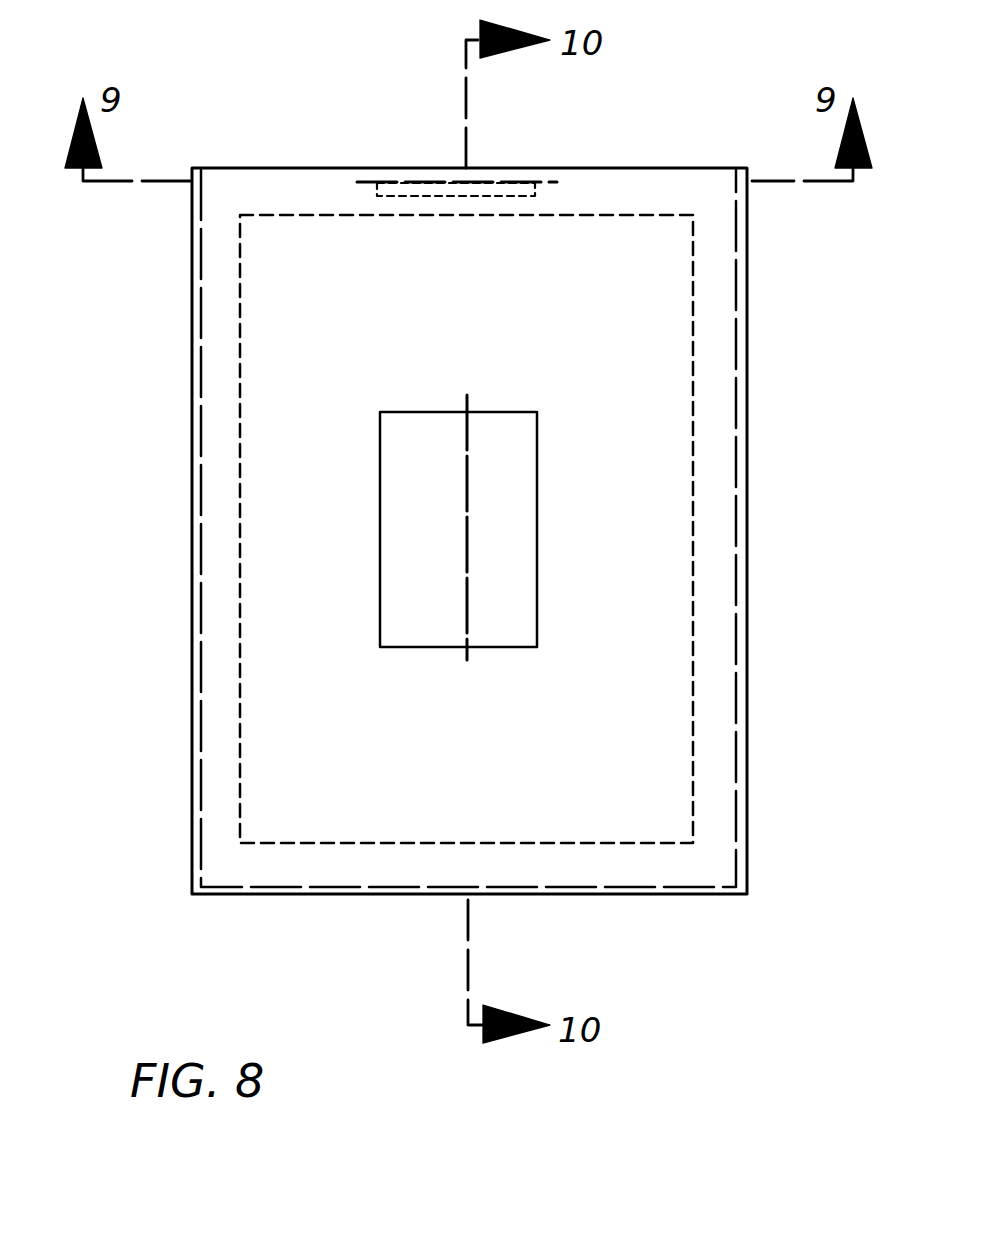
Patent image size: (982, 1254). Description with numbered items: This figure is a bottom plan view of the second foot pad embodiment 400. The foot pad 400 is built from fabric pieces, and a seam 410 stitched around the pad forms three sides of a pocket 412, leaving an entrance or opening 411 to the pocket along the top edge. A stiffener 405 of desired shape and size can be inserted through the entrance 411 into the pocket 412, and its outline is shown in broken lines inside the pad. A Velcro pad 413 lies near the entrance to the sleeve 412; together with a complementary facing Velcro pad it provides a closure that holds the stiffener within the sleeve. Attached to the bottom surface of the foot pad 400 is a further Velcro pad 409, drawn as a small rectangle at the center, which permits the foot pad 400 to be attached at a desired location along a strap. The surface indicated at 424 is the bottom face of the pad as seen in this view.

The foot pad 400 is at (158, 316).
The stiffener 405 is at (275, 450).
The Velcro pad 409 is at (505, 542).
The seam 410 is at (200, 625).
The entrance or opening 411 is at (388, 166).
The pocket 412 is at (368, 250).
The Velcro pad 413 is at (503, 168).
The body-facing surface 424 is at (608, 297).